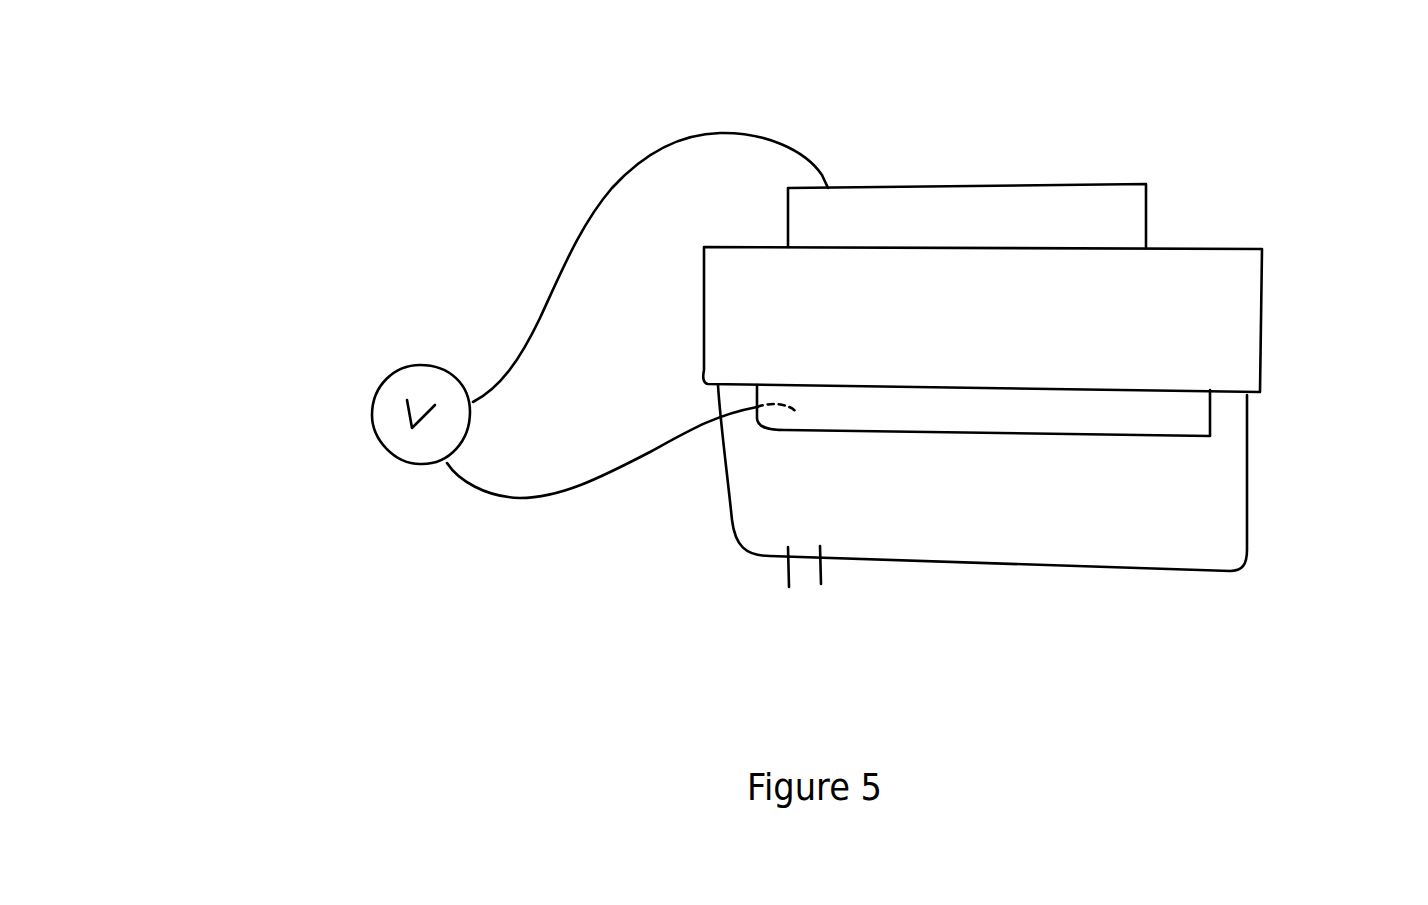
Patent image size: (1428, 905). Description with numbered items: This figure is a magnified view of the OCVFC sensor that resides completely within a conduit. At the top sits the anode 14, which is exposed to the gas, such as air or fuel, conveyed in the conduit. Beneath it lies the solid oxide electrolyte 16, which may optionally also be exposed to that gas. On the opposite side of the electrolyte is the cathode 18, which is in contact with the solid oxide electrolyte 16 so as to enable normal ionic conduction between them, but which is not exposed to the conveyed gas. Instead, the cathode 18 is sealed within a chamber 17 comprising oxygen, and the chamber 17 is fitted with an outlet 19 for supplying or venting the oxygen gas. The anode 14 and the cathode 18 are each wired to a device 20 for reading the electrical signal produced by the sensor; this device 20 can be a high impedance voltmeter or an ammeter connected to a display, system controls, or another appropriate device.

The anode 14 is at (1010, 198).
The solid oxide electrolyte 16 is at (1195, 290).
The chamber 17 is at (963, 520).
The cathode 18 is at (870, 408).
The outlet 19 is at (785, 570).
The device for reading the electrical signal 20 is at (410, 405).